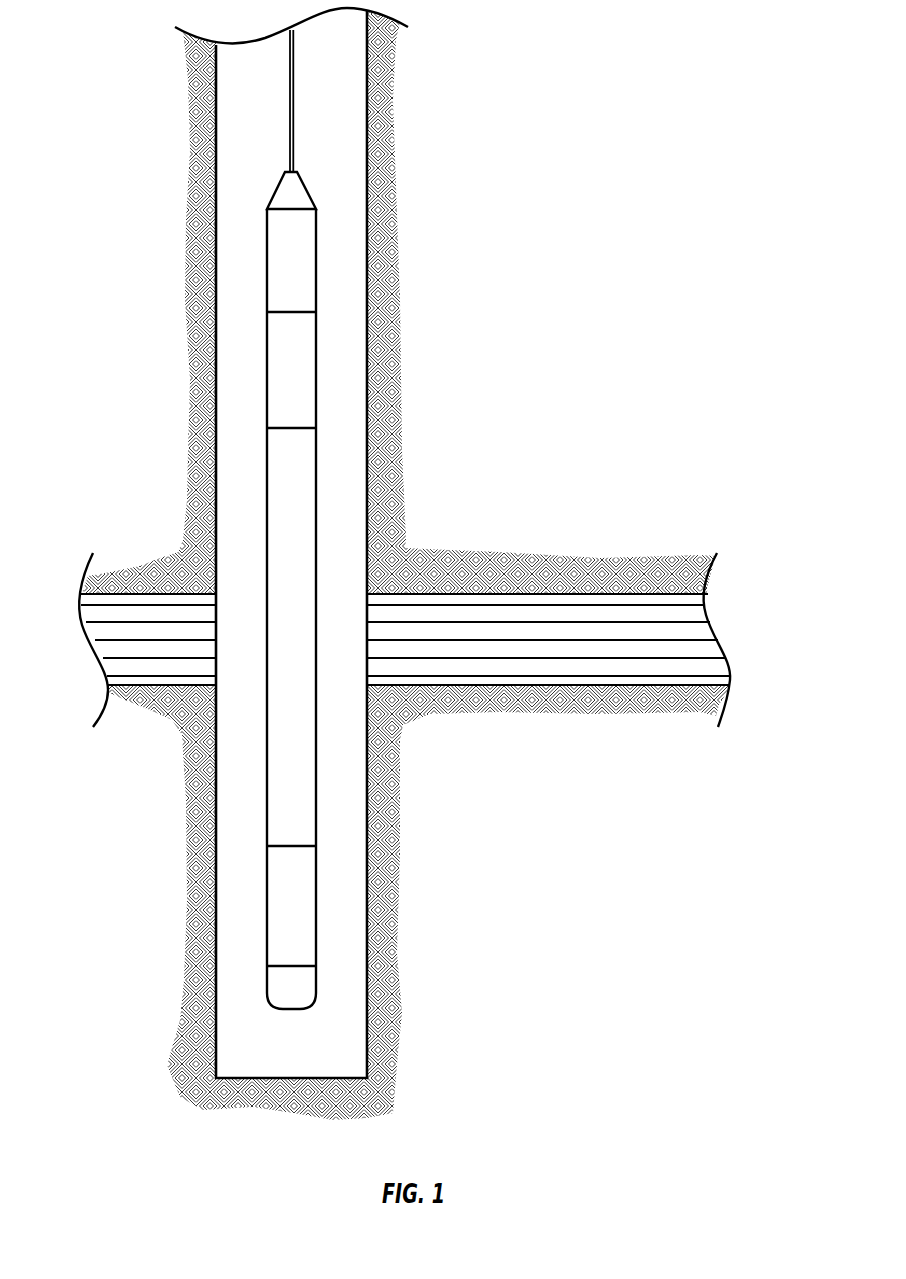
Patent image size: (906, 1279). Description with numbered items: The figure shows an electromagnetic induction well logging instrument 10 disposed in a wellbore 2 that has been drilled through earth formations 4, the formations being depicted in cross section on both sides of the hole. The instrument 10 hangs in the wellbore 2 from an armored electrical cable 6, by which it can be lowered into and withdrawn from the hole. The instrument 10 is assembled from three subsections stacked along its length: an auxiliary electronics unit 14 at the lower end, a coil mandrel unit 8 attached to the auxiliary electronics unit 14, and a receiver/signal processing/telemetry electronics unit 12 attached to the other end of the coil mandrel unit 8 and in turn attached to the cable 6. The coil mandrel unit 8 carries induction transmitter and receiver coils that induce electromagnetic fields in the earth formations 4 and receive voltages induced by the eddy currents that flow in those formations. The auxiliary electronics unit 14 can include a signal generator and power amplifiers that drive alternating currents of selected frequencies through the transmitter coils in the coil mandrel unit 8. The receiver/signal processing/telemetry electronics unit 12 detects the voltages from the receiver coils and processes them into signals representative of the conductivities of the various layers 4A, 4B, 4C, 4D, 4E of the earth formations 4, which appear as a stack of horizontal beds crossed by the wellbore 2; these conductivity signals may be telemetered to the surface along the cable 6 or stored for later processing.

The wellbore 2 is at (345, 133).
The earth formations 4 is at (416, 640).
The layer of the earth formations 4A is at (706, 598).
The layer of the earth formations 4B is at (701, 617).
The layer of the earth formations 4C is at (712, 650).
The layer of the earth formations 4D is at (716, 663).
The layer of the earth formations 4E is at (722, 682).
The armored electrical cable 6 is at (291, 107).
The coil mandrel unit 8 is at (282, 600).
The electromagnetic induction well logging instrument 10 is at (338, 519).
The receiver/signal processing/telemetry electronics unit 12 is at (282, 363).
The auxiliary electronics unit 14 is at (282, 910).